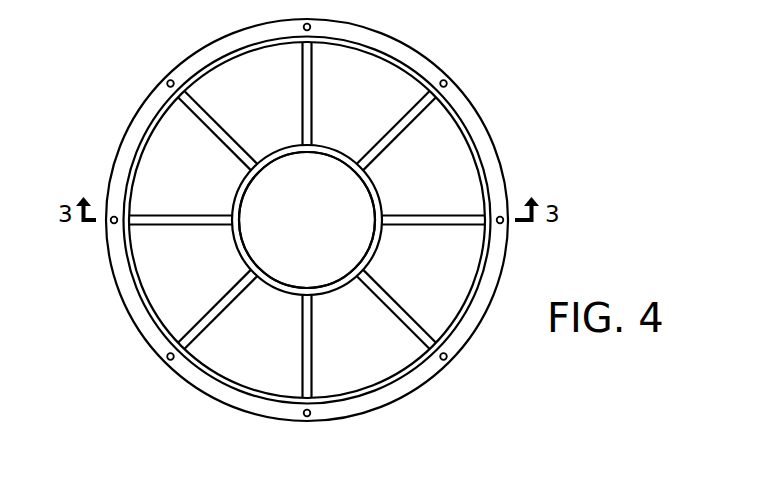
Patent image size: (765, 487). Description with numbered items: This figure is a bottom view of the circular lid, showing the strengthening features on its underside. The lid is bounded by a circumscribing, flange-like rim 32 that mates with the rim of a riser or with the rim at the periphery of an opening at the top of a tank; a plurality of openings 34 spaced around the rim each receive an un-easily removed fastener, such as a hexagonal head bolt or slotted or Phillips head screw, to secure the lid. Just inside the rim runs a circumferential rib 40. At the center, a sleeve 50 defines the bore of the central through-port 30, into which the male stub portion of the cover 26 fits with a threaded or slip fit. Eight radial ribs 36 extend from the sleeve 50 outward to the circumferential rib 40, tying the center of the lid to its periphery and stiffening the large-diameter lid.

The cover 26 is at (279, 272).
The central through-port 30 is at (247, 193).
The rim 32 is at (467, 113).
The opening 34 is at (446, 361).
The radial ribs 36 is at (222, 297).
The circumferential rib 40 is at (475, 160).
The sleeve 50 is at (375, 198).